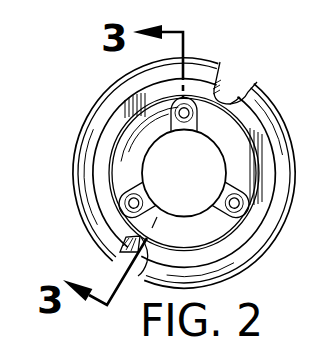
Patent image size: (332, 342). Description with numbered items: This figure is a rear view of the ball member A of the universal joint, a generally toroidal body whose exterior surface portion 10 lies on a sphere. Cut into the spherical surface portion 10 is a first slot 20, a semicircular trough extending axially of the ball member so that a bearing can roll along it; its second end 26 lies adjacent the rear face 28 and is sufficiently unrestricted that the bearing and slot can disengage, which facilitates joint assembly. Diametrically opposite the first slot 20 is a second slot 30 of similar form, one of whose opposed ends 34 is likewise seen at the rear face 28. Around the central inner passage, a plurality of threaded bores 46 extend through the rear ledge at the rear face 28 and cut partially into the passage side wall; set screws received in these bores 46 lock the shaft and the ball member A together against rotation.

The ball member A is at (173, 158).
The exterior surface portion 10 is at (201, 67).
The first slot 20 is at (228, 97).
The second end 26 is at (238, 98).
The rear face 28 is at (212, 228).
The second slot 30 is at (120, 262).
The opposed end 34 is at (127, 240).
The threaded bores 46 is at (226, 198).